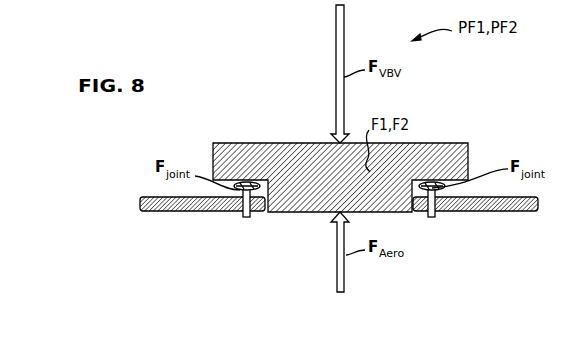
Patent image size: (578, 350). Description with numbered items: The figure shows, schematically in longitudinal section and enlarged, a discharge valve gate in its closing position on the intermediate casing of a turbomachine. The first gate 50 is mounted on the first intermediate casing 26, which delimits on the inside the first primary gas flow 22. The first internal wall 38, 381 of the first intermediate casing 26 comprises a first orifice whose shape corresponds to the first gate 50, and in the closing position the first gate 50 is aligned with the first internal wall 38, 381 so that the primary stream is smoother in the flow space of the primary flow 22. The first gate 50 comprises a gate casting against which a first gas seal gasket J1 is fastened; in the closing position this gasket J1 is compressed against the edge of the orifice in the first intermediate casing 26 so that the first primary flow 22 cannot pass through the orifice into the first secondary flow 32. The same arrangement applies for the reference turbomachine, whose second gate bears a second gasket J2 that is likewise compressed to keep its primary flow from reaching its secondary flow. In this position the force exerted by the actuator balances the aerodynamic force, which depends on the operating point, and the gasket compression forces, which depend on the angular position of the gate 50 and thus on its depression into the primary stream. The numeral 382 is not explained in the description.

The first secondary flow 32 is at (280, 74).
The first gate 50 is at (269, 137).
The first primary gas flow 22 is at (280, 272).
The first intermediate casing 26 is at (203, 212).
The first internal wall 38 is at (475, 226).
The first internal wall 381 is at (475, 204).
The flange second portion 382 is at (480, 212).
The first gas seal gasket J1 is at (434, 186).
The second gasket J2 is at (246, 188).